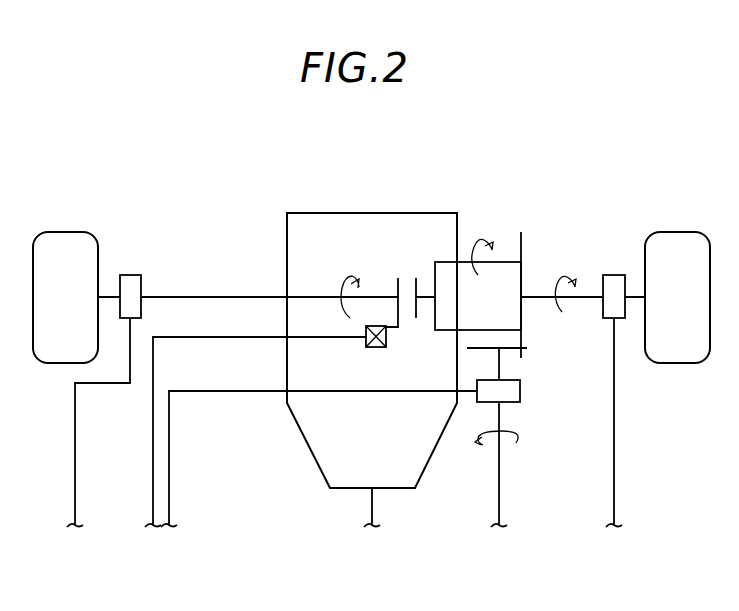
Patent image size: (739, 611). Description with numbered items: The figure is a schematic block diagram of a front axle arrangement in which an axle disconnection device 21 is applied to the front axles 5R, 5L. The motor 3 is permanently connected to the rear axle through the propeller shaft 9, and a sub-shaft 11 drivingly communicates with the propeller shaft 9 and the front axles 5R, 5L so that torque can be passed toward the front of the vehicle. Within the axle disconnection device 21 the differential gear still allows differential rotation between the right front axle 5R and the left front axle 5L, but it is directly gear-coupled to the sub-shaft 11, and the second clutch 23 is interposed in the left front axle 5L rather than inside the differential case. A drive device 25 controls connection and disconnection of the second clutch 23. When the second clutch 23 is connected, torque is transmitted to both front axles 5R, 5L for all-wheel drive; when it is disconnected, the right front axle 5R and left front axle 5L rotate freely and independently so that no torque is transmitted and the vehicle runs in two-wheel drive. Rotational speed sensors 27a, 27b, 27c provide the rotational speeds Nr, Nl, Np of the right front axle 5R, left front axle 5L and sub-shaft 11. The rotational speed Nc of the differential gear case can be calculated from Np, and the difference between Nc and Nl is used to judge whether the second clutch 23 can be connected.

The motor 3 is at (312, 213).
The axle disconnection device 21 is at (511, 180).
The second clutch 23 is at (410, 341).
The drive device 25 is at (374, 350).
The rotational speed sensor 27a is at (621, 271).
The rotational speed sensor 27b is at (132, 275).
The rotational speed sensor 27c is at (521, 390).
The left front axle 5L is at (157, 295).
The right front axle 5R is at (591, 293).
The propeller shaft 9 is at (375, 510).
The sub-shaft 11 is at (500, 490).
The rotational speed of the left front axle Nl is at (341, 277).
The rotational speed of the differential gear case Nc is at (478, 245).
The rotational speed of the right front axle Nr is at (558, 282).
The rotational speed of the sub-shaft Np is at (512, 427).